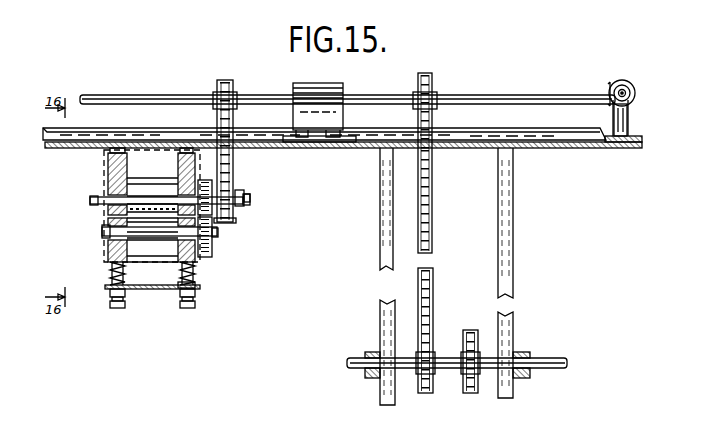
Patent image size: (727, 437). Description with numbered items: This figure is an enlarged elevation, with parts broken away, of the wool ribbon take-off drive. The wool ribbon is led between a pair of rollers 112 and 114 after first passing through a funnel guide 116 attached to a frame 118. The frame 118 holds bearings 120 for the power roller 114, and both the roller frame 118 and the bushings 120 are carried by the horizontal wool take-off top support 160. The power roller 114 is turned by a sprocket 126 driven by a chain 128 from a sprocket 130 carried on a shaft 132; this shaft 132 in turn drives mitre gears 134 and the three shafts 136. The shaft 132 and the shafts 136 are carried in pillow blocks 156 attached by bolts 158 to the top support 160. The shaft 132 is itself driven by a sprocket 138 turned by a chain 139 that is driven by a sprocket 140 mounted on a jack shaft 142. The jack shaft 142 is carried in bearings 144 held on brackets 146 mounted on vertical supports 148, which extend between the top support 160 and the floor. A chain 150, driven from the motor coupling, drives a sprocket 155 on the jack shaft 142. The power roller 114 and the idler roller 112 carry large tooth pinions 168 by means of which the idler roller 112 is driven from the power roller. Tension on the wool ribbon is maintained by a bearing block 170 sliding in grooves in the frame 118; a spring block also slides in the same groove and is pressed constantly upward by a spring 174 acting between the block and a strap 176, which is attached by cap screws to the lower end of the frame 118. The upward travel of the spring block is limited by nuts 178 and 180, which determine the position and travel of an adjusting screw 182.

The idler roller 112 is at (152, 258).
The power roller 114 is at (150, 184).
The funnel guide 116 is at (106, 220).
The frame 118 is at (108, 157).
The bearings 120 is at (108, 196).
The sprocket 126 is at (233, 218).
The chain 128 is at (233, 133).
The sprocket 130 is at (240, 64).
The shaft 132 is at (148, 96).
The mitre gears 134 is at (626, 81).
The shafts 136 is at (628, 95).
The sprocket 138 is at (439, 156).
The chain 139 is at (432, 236).
The sprocket 140 is at (430, 393).
The jack shaft 142 is at (560, 357).
The bearings 144 is at (370, 353).
The brackets 146 is at (372, 376).
The vertical supports 148 is at (498, 284).
The chain 150 is at (476, 365).
The sprocket 155 is at (478, 393).
The pillow blocks 156 is at (343, 87).
The bolts 158 is at (346, 135).
The horizontal wool take-off top support 160 is at (562, 147).
The large tooth pinions 168 is at (205, 180).
The bearing block 170 is at (108, 258).
The spring 174 is at (110, 276).
The strap 176 is at (196, 287).
The nut 178 is at (128, 290).
The nut 180 is at (196, 298).
The adjusting screw 182 is at (183, 306).